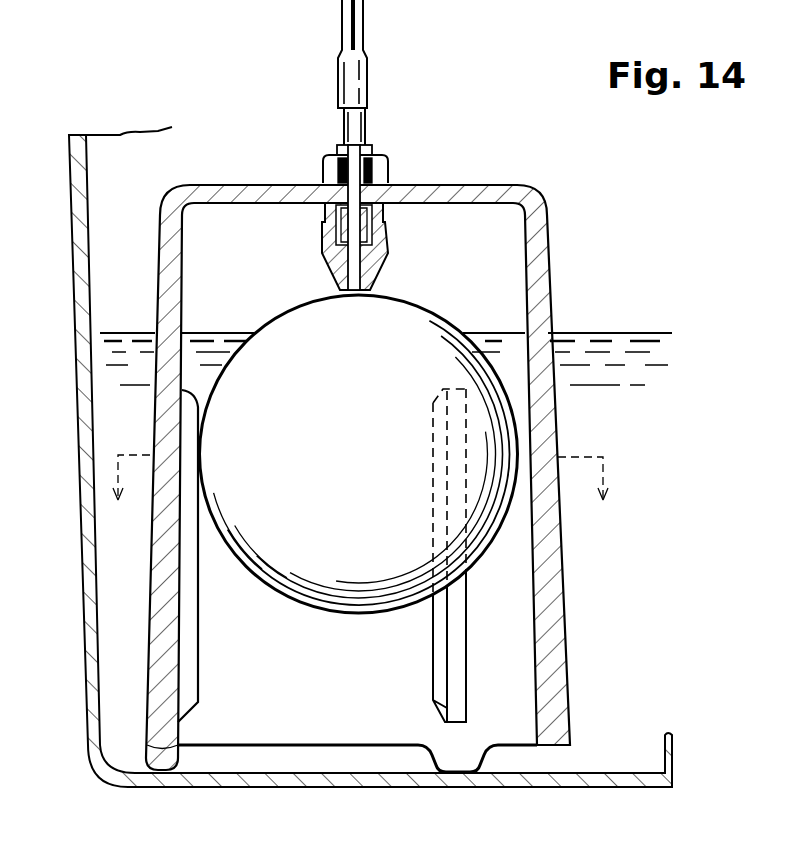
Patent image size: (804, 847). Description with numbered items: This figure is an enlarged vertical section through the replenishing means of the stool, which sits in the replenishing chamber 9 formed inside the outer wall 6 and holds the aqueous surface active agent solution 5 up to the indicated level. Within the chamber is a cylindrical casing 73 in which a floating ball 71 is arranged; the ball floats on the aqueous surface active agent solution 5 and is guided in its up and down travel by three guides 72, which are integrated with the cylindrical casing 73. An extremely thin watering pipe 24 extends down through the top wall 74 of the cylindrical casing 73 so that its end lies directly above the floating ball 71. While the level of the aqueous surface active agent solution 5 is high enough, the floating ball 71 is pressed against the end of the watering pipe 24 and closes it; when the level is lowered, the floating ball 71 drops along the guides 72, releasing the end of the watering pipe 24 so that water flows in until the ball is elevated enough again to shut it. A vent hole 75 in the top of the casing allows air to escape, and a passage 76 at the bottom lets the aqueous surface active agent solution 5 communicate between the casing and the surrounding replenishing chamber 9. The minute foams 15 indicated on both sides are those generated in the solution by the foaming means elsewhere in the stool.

The aqueous surface active agent solution 5 is at (618, 332).
The outer wall 6 is at (88, 580).
The replenishing chamber 9 is at (142, 245).
The minute foams 15 is at (361, 495).
The watering pipe 24 is at (364, 32).
The floating ball 71 is at (430, 313).
The guides 72 is at (188, 660).
The cylindrical casing 73 is at (175, 256).
The top wall 74 is at (296, 183).
The vent hole 75 is at (250, 183).
The passage 76 is at (305, 784).